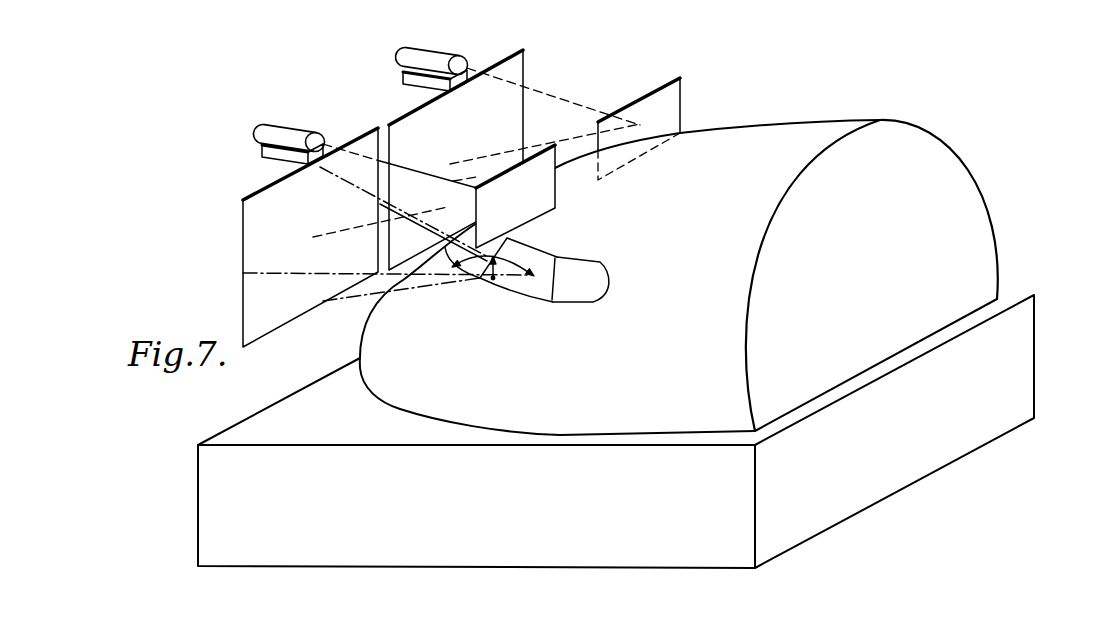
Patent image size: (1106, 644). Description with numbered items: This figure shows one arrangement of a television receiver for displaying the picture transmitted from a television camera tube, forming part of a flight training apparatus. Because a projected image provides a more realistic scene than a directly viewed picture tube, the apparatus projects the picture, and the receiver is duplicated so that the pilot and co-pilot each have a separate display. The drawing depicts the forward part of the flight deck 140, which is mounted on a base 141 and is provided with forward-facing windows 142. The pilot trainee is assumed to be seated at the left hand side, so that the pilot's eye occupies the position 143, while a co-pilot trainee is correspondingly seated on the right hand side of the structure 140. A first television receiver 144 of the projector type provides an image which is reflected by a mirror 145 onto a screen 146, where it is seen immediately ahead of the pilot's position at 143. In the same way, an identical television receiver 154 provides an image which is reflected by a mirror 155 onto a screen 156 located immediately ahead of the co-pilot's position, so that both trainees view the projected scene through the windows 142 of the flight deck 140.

The flight deck 140 is at (745, 137).
The base 141 is at (1003, 349).
The forward-facing windows 142 is at (546, 258).
The pilot's eye position 143 is at (537, 277).
The first television receiver 144 is at (284, 130).
The mirror 145 is at (548, 193).
The screen 146 is at (305, 304).
The television receiver 154 is at (445, 39).
The mirror 155 is at (672, 92).
The screen 156 is at (523, 78).